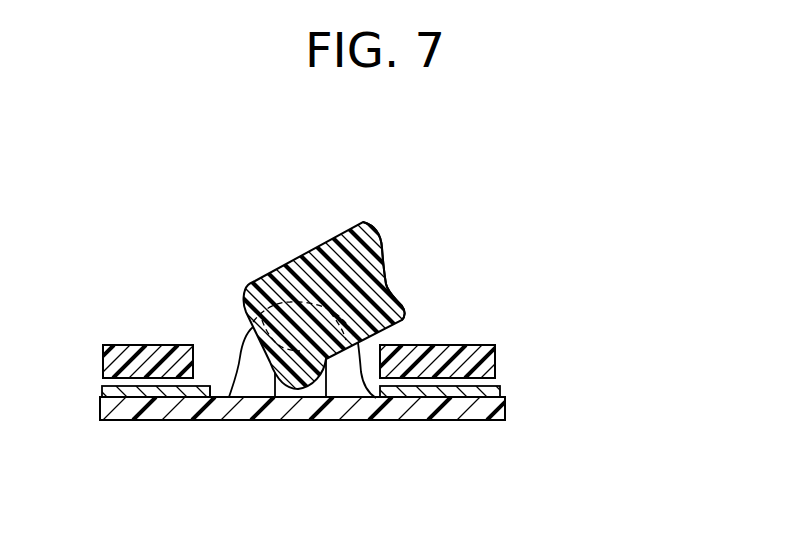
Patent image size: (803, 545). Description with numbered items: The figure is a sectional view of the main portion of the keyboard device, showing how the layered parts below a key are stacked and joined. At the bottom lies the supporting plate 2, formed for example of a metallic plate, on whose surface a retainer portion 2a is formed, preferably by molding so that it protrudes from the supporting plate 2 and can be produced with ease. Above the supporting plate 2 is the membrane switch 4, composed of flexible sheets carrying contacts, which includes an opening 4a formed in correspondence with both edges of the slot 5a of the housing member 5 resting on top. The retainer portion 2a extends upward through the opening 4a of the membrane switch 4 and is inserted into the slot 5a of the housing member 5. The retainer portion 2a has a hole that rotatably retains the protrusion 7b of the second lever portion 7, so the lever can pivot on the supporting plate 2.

The supporting plate 2 is at (519, 410).
The retainer portion 2a is at (258, 369).
The membrane switch 4 is at (516, 392).
The opening 4a is at (214, 385).
The housing member 5 is at (512, 358).
The slot 5a is at (210, 368).
The second lever portion 7 is at (285, 283).
The protrusion 7b is at (394, 299).